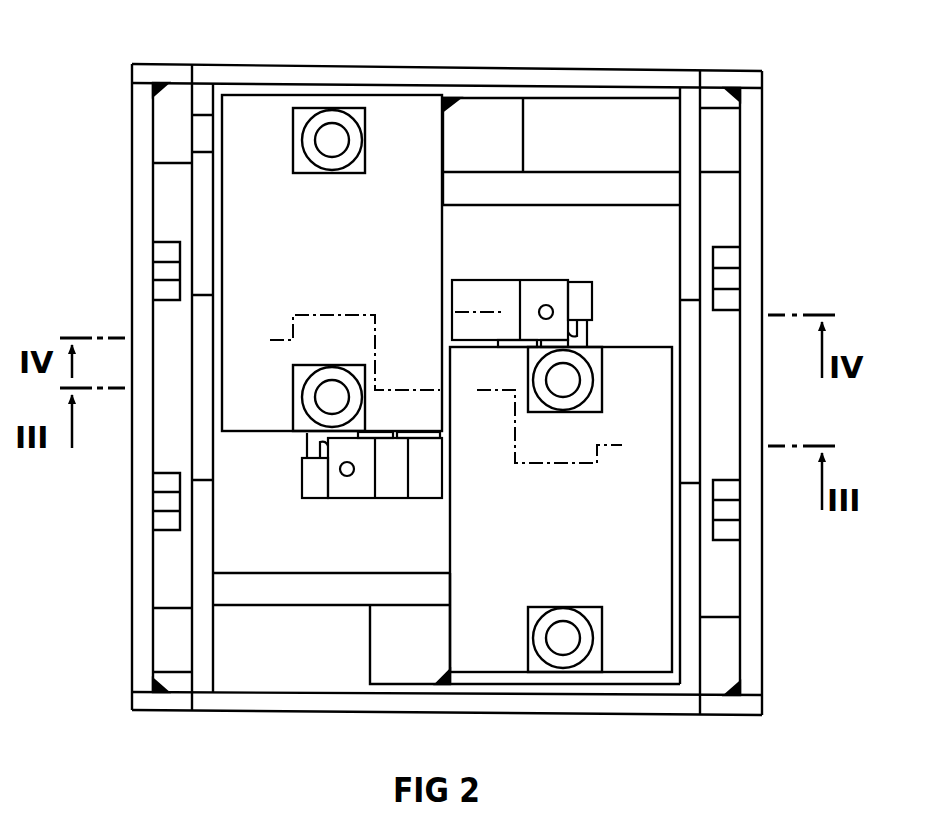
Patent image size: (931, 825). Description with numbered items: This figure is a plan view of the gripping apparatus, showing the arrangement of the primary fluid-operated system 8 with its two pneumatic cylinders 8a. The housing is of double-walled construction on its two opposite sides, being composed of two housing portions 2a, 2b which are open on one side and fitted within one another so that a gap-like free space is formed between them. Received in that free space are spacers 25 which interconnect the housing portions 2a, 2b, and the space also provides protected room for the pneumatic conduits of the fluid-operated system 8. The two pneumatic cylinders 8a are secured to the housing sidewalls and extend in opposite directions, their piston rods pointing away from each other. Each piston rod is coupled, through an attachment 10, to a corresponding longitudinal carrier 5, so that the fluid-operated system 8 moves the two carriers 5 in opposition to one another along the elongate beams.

The housing portion 2a is at (753, 195).
The housing portion 2b is at (690, 112).
The spacer 25 is at (723, 140).
The primary fluid-operated system 8 is at (280, 223).
The pneumatic cylinder 8a is at (272, 193).
The attachment 10 is at (353, 485).
The carrier 5 is at (410, 438).